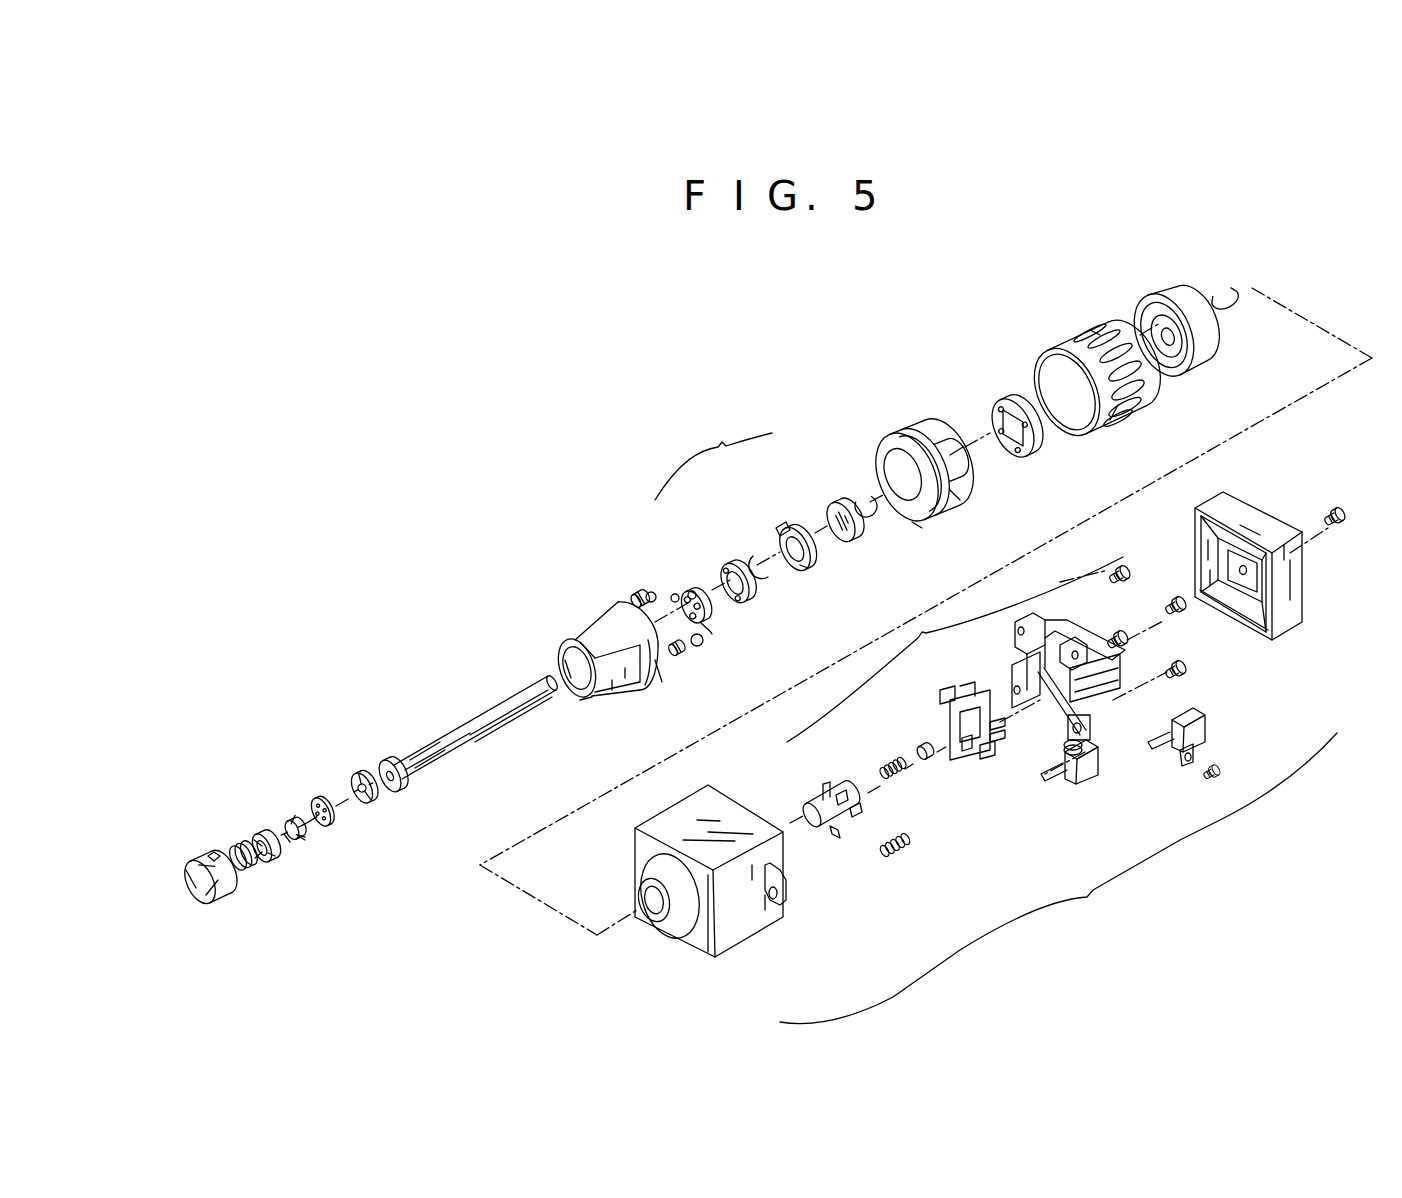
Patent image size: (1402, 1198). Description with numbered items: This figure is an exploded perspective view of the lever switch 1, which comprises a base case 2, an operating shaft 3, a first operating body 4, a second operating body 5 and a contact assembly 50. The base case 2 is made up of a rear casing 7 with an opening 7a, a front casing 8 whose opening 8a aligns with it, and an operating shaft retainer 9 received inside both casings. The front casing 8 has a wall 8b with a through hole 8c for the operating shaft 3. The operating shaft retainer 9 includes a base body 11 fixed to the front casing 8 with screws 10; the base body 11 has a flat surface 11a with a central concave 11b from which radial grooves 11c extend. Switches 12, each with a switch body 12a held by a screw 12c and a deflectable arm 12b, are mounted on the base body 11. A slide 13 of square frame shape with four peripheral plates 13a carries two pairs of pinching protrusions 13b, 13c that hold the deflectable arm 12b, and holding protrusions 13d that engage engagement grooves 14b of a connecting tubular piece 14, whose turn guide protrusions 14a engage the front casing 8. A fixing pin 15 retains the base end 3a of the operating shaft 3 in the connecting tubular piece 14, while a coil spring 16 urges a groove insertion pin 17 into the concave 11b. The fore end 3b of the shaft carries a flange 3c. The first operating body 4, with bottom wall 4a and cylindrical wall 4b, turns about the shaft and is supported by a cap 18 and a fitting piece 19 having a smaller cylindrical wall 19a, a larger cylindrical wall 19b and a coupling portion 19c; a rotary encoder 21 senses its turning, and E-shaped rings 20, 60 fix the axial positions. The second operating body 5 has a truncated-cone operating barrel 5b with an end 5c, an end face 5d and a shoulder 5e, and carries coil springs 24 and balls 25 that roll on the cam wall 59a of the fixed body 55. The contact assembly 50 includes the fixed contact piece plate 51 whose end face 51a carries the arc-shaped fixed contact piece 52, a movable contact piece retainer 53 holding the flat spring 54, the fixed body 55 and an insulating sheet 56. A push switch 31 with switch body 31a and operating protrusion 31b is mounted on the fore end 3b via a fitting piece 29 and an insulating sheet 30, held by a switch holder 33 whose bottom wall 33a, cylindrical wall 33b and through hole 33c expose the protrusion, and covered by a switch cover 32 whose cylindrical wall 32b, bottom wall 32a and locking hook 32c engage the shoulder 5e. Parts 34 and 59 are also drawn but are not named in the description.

The lever switch 1 is at (804, 348).
The base case 2 is at (1058, 878).
The operating shaft 3 is at (479, 718).
The base end 3a is at (542, 692).
The fore end 3b is at (413, 757).
The flange 3c is at (392, 793).
The first operating body 4 is at (1063, 344).
The bottom wall 4a is at (1145, 408).
The cylindrical wall 4b is at (1096, 332).
The second operating body 5 is at (585, 625).
The truncated-cone-shaped operating barrel 5b is at (622, 680).
The end 5c is at (583, 700).
The end face 5d is at (560, 688).
The shoulder 5e is at (658, 675).
The rear casing 7 is at (1305, 590).
The opening 7a is at (1245, 530).
The front casing 8 is at (760, 935).
The opening 8a is at (798, 878).
The wall 8b is at (700, 955).
The through hole 8c is at (655, 905).
The operating shaft retainer 9 is at (955, 649).
The screws 10 is at (1341, 505).
The base body 11 is at (1105, 700).
The flat surface 11a is at (1018, 630).
The concave 11b is at (1022, 690).
The grooves 11c is at (1085, 730).
The switch 12 is at (1208, 730).
The switch body 12a is at (1085, 760).
The deflectable arm 12b is at (1055, 777).
The screw 12c is at (1225, 773).
The slide 13 is at (985, 755).
The peripheral plates 13a is at (952, 700).
The pinching protrusions 13b is at (997, 746).
The pinching protrusions 13c is at (1005, 725).
The holding protrusions 13d is at (963, 745).
The connecting tubular piece 14 is at (815, 830).
The turn guide protrusions 14a is at (825, 790).
The engagement grooves 14b is at (842, 796).
The fixing pin 15 is at (905, 843).
The coil spring 16 is at (900, 772).
The groove insertion pin 17 is at (920, 748).
The cap 18 is at (1156, 300).
The fitting piece 19 is at (922, 430).
The smaller diameter cylindrical wall 19a is at (970, 458).
The larger diameter cylindrical wall 19b is at (963, 503).
The coupling portion 19c is at (918, 526).
The E-shaped ring 20 is at (1222, 291).
The rotary encoder 21 is at (1000, 400).
The coil spring 24 is at (630, 600).
The ball 25 is at (648, 594).
The fitting piece 29 is at (372, 782).
The insulating sheet 30 is at (330, 805).
The push switch 31 is at (296, 820).
The switch body 31a is at (300, 836).
The operating protrusion 31b is at (290, 842).
The switch cover 32 is at (195, 862).
The bottom wall 32a is at (193, 898).
The cylindrical wall 32b is at (212, 902).
The locking hook 32c is at (213, 857).
The switch holder 33 is at (268, 835).
The bottom wall 33a is at (262, 862).
The cylindrical wall 33b is at (275, 856).
The through hole 33c is at (258, 850).
The spring 34 is at (240, 848).
The contact assembly 50 is at (713, 455).
The fixed contact piece plate 51 is at (815, 556).
The end face 51a is at (783, 526).
The fixed contact piece 52 is at (798, 570).
The movable contact piece retainer 53 is at (733, 562).
The flat spring 54 is at (760, 556).
The fixed body 55 is at (690, 584).
The insulating sheet 56 is at (838, 500).
The screws 59 is at (676, 596).
The cam wall 59a is at (714, 606).
The E-shaped ring 60 is at (865, 488).